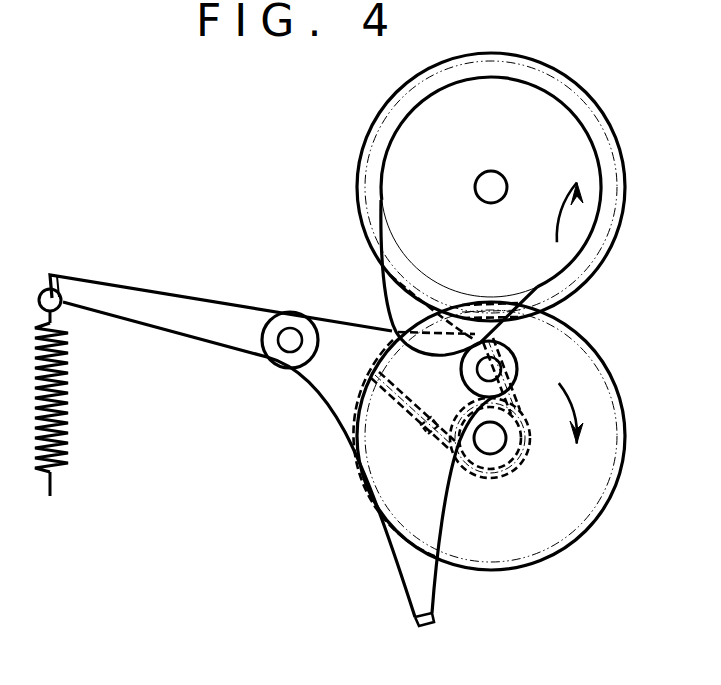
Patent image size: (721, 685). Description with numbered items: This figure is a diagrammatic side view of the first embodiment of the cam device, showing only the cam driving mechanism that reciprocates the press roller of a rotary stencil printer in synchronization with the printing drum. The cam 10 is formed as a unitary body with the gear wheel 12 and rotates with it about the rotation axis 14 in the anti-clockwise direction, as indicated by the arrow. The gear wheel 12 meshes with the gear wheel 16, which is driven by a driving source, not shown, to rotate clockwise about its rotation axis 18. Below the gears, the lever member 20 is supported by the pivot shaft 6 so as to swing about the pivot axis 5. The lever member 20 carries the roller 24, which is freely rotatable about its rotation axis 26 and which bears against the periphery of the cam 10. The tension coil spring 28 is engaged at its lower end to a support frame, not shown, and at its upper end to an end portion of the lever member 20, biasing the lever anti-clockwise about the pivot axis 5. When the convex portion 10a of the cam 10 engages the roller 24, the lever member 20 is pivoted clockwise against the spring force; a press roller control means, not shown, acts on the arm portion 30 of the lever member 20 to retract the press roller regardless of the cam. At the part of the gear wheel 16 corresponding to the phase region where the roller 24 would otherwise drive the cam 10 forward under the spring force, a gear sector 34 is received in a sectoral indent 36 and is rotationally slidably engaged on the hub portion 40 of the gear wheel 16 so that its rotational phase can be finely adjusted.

The pivot axis 5 is at (283, 347).
The pivot shaft 6 is at (292, 346).
The cam 10 is at (386, 206).
The convex portion 10a is at (392, 320).
The gear wheel 12 is at (625, 141).
The rotation axis 14 is at (491, 187).
The gear wheel 16 is at (623, 407).
The rotation axis 18 is at (490, 440).
The lever member 20 is at (180, 292).
The roller 24 is at (516, 360).
The rotation axis 26 is at (482, 372).
The tension coil spring 28 is at (68, 383).
The arm portion 30 is at (402, 573).
The gear sector 34 is at (406, 412).
The sectoral indent 36 is at (426, 432).
The hub portion 40 is at (521, 462).